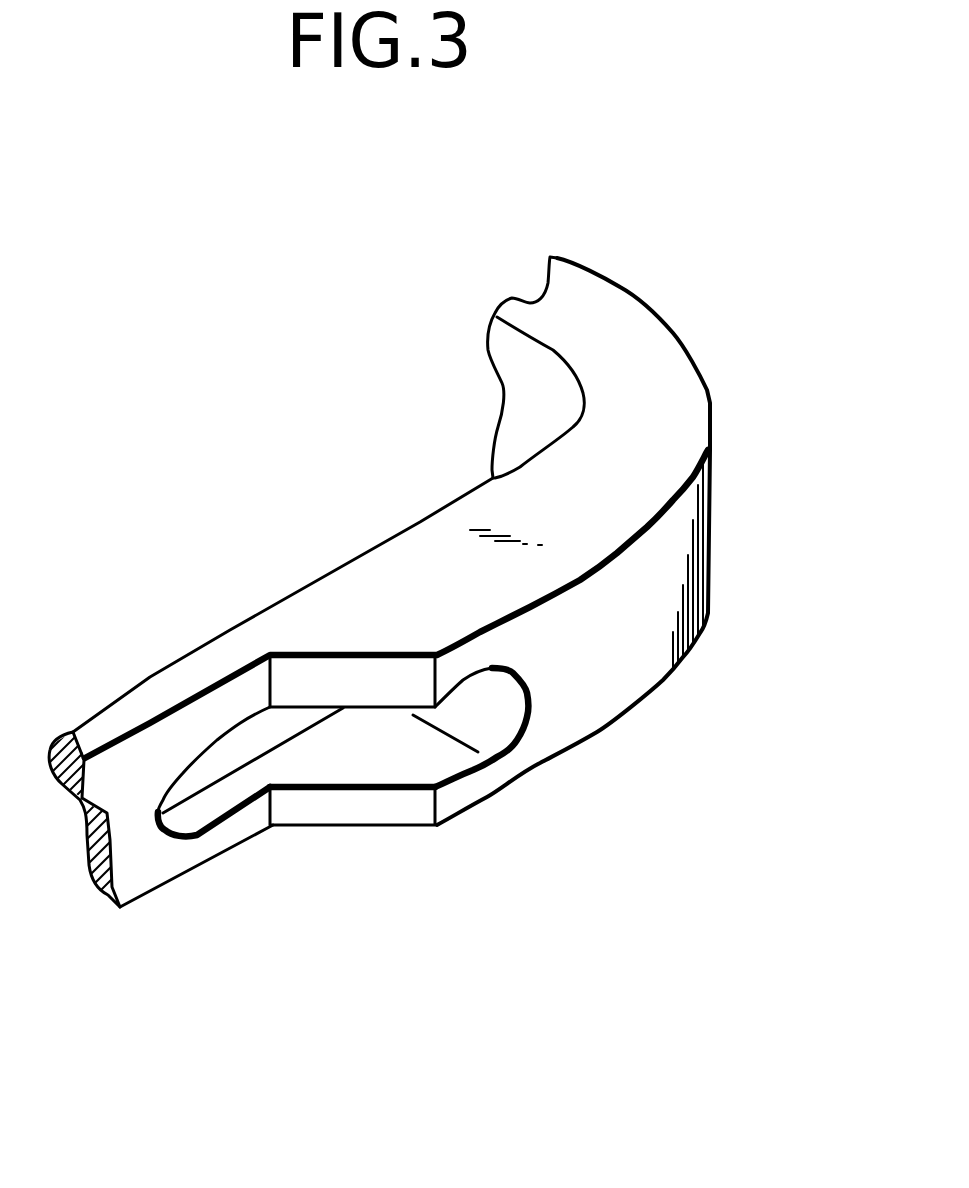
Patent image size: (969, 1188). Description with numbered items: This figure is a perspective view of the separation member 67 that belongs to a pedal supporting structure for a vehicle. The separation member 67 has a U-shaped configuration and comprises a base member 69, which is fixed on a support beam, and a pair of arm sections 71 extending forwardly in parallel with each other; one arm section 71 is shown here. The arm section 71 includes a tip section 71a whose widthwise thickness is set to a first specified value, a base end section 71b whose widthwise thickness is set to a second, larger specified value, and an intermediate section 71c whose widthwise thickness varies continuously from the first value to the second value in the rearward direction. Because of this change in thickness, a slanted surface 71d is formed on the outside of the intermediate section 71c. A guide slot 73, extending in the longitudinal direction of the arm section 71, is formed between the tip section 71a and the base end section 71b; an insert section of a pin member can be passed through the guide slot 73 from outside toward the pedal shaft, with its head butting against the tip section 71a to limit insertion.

The separation member 67 is at (445, 639).
The base member 69 is at (630, 290).
The arm section 71 is at (369, 724).
The tip section 71a is at (147, 895).
The base end section 71b is at (595, 713).
The intermediate section 71c is at (345, 827).
The slanted surface 71d is at (365, 680).
The guide slot 73 is at (485, 767).